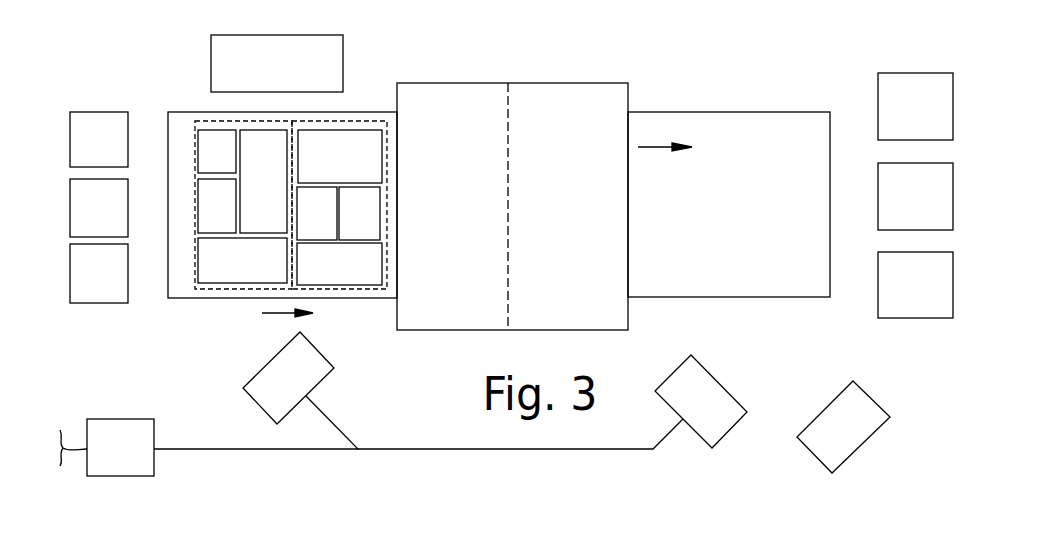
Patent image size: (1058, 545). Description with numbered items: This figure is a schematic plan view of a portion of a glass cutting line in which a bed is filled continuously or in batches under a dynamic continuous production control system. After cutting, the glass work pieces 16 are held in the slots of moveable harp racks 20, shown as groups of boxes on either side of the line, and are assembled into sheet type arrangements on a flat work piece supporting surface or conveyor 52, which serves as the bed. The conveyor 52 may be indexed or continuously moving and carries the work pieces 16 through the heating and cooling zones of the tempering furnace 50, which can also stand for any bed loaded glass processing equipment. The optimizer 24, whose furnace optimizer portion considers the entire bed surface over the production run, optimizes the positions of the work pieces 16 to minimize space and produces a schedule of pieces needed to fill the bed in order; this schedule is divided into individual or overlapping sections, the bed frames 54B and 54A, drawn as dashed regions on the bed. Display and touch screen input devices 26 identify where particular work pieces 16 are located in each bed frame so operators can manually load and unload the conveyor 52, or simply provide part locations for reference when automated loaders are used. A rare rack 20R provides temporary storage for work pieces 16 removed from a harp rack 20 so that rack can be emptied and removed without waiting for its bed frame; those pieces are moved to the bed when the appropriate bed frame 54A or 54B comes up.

The cut glass work piece 16 is at (200, 163).
The harp rack 20 is at (82, 153).
The rare rack 20R is at (890, 466).
The optimizer 24 is at (96, 463).
The display and touch screen input device 26 is at (303, 371).
The tempering furnace 50 is at (490, 193).
The conveyor 52 is at (182, 288).
The bed frame 54A is at (390, 289).
The bed frame 54B is at (213, 288).